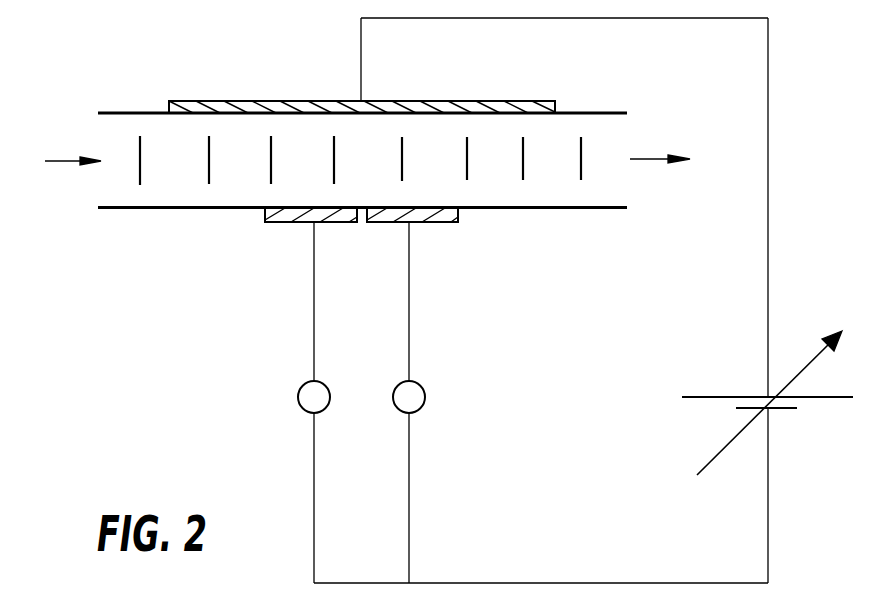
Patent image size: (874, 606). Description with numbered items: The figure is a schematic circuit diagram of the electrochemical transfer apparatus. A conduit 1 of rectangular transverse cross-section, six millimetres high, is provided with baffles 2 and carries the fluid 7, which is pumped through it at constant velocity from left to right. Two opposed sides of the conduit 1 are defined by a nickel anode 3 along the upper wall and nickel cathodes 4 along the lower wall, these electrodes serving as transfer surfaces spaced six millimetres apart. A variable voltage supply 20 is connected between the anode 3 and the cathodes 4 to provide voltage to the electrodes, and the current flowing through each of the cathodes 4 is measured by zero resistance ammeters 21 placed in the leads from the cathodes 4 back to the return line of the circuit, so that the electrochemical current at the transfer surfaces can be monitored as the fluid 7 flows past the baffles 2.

The conduit 1 is at (570, 209).
The baffles 2 is at (142, 170).
The nickel anode 3 is at (503, 103).
The nickel cathodes 4 is at (289, 216).
The fluid 7 is at (121, 136).
The variable voltage supply 20 is at (778, 412).
The zero resistance ammeters 21 is at (305, 404).